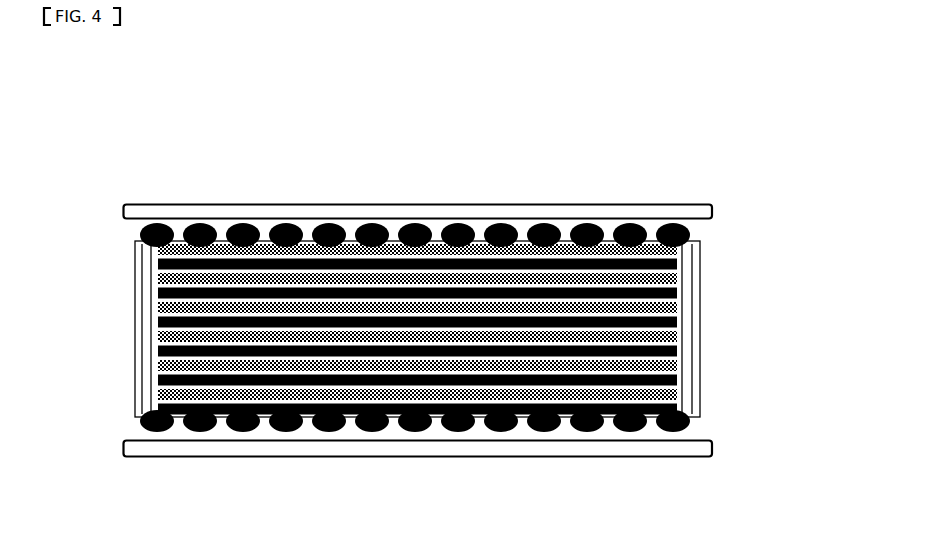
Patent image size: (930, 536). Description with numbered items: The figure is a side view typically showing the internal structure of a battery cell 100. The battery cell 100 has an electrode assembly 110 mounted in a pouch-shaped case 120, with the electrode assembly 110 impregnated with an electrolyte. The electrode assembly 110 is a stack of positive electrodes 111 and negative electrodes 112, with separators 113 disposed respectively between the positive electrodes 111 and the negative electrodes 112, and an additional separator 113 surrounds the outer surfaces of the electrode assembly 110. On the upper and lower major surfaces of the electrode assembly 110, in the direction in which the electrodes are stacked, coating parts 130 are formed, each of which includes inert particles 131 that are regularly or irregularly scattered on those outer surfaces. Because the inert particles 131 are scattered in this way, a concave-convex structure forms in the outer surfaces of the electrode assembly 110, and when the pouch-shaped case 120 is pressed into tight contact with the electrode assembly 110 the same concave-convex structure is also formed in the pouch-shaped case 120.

The battery cell 100 is at (92, 100).
The electrode assembly 110 is at (708, 297).
The positive electrode 111 is at (158, 251).
The negative electrode 112 is at (158, 292).
The separator 113 is at (160, 331).
The pouch-shaped case 120 is at (697, 211).
The coating part 130 is at (118, 224).
The inert particle 131 is at (172, 229).